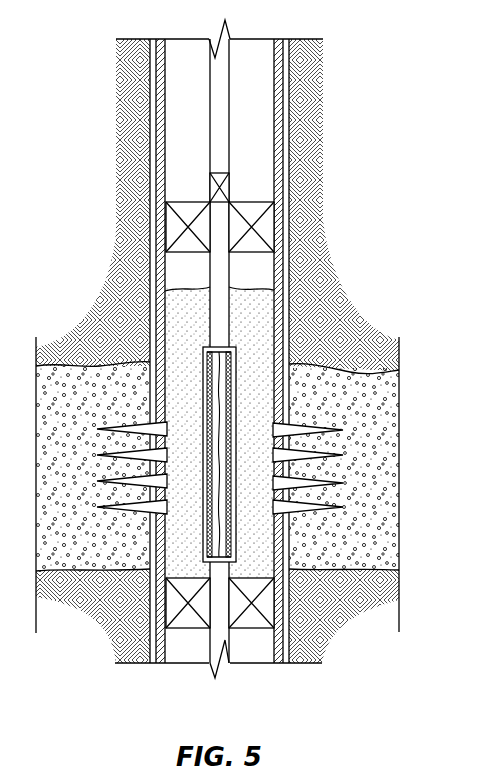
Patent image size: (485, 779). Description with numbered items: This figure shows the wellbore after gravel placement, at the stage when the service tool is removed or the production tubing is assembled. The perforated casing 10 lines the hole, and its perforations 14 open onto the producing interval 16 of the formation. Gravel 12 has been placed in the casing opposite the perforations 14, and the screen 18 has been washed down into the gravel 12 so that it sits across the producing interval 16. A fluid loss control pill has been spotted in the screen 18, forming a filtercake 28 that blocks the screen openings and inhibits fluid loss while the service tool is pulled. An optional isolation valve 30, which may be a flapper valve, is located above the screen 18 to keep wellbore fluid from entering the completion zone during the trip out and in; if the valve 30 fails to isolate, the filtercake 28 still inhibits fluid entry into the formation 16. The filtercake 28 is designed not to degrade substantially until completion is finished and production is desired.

The perforated casing 10 is at (288, 407).
The gravel 12 is at (253, 303).
The perforations 14 is at (123, 421).
The producing interval 16 is at (385, 416).
The screen 18 is at (198, 362).
The filtercake 28 is at (233, 366).
The isolation valve 30 is at (232, 185).